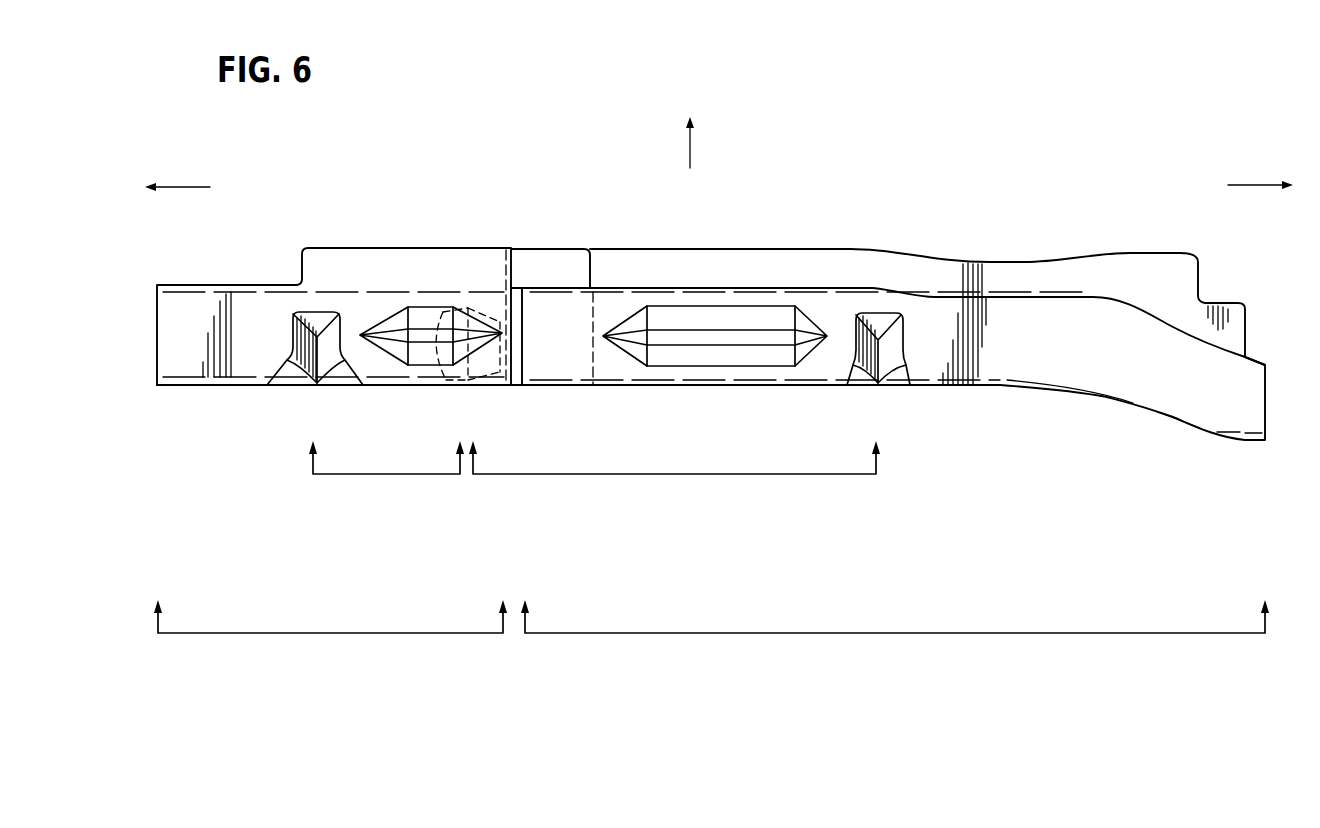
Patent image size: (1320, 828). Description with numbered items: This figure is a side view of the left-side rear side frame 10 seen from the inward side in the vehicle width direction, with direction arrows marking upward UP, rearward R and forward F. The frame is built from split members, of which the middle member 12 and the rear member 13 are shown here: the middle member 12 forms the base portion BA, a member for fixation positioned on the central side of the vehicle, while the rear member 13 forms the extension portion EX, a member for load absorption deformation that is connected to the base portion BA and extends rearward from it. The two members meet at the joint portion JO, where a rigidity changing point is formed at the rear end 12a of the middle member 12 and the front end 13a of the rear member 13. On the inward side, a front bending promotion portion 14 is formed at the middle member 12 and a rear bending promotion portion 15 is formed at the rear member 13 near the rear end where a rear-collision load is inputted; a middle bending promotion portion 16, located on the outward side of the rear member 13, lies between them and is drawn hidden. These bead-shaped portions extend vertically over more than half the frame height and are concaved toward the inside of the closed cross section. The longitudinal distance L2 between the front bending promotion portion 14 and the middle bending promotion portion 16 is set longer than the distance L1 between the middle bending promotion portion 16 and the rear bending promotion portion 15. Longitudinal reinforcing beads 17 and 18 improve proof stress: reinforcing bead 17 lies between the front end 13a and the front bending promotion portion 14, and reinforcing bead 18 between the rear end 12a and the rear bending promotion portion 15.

The left-side rear side frame 10 is at (561, 232).
The middle member 12 is at (1022, 258).
The rear end of the middle member 12a is at (525, 364).
The rear member 13 is at (347, 248).
The front end of the rear member 13a is at (596, 353).
The front bending promotion portion 14 is at (877, 313).
The rear bending promotion portion 15 is at (297, 341).
The middle bending promotion portion 16 is at (504, 351).
The reinforcing bead 17 is at (731, 364).
The reinforcing bead 18 is at (427, 307).
The joint portion JO is at (540, 249).
The longitudinal distance L1 is at (381, 476).
The longitudinal distance L2 is at (668, 476).
The extension portion EX is at (313, 635).
The base portion BA is at (818, 635).
The upward direction UP is at (689, 128).
The rearward direction R is at (169, 185).
The forward direction F is at (1270, 185).